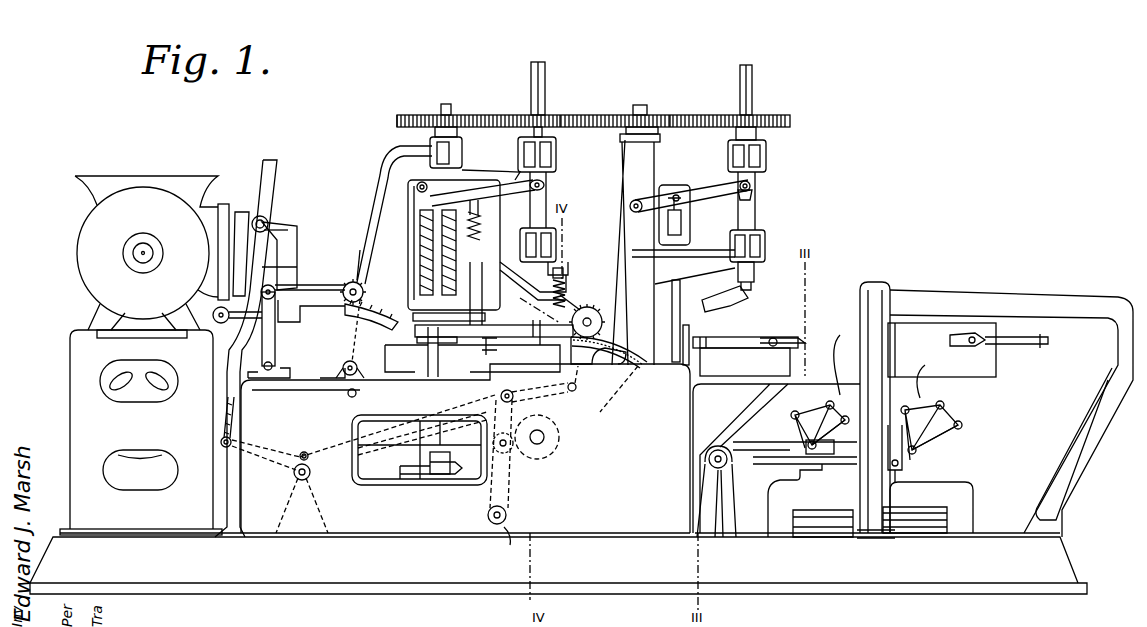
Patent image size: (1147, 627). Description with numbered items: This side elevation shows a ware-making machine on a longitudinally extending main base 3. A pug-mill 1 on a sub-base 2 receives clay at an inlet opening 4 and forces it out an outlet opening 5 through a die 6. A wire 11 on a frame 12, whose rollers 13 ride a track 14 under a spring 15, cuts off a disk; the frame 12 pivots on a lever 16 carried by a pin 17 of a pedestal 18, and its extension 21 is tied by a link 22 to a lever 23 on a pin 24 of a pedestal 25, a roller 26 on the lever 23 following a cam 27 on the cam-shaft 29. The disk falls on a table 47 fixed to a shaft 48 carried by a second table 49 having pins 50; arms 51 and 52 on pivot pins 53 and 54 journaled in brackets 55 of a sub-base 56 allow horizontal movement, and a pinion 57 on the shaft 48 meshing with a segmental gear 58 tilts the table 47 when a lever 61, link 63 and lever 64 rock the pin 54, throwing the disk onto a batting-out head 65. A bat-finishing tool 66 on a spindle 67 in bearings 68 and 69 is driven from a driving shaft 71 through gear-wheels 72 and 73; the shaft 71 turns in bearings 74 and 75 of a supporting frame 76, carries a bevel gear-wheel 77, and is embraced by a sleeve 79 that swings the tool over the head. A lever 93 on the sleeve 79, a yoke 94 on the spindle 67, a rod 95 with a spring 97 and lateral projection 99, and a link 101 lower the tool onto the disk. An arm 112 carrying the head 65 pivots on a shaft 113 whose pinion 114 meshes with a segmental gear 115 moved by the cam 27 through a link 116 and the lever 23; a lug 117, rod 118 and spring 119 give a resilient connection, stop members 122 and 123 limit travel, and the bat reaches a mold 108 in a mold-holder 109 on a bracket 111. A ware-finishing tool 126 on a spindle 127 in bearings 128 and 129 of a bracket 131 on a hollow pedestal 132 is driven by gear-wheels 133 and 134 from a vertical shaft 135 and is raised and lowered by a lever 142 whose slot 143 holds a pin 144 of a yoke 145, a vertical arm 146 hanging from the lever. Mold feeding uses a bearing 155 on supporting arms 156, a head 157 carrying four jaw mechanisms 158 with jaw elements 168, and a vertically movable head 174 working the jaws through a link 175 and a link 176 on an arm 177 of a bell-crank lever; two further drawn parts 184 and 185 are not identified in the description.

The motor 1 is at (78, 243).
The pedestal 2 is at (70, 410).
The base 3 is at (328, 568).
The motor housing 4 is at (160, 178).
The coupling body 5 is at (298, 245).
The coupling link 6 is at (285, 268).
The link arm 11 is at (300, 222).
The lever 12 is at (274, 162).
The pivot 13 is at (268, 218).
The clutch disc 14 is at (228, 206).
The connecting link 15 is at (238, 412).
The link 16 is at (226, 447).
The pivot pin 17 is at (312, 476).
The support legs 18 is at (328, 516).
The pin 21 is at (312, 455).
The connecting rod 22 is at (320, 457).
The link 23 is at (512, 478).
The pivot 24 is at (507, 515).
The arm 25 is at (510, 545).
The gear 26 is at (514, 450).
The cam 27 is at (556, 430).
The cam shaft 29 is at (546, 445).
The rod 47 is at (325, 285).
The pinion 48 is at (365, 284).
The link 49 is at (290, 310).
The crank pin 50 is at (270, 282).
The crank arm 51 is at (276, 332).
The link 52 is at (341, 331).
The pivot 53 is at (274, 366).
The pivot 54 is at (351, 358).
The bracket 55 is at (266, 375).
The frame 56 is at (228, 502).
The arm 57 is at (354, 272).
The gear segment 58 is at (390, 312).
The window 61 is at (419, 450).
The link 63 is at (386, 400).
The pivot 64 is at (341, 403).
The plate 65 is at (486, 314).
The lever 66 is at (512, 285).
The rod 67 is at (546, 70).
The guide block 68 is at (556, 150).
The guide block 69 is at (560, 243).
The slide 71 is at (448, 104).
The rack end 72 is at (414, 114).
The rack portion 73 is at (570, 114).
The guide block 74 is at (463, 150).
The column 75 is at (482, 298).
The frame arm 76 is at (378, 188).
The stop 77 is at (451, 466).
The housing 79 is at (424, 203).
The screw 93 is at (433, 183).
The lever 94 is at (545, 185).
The pin 95 is at (490, 212).
The spring 97 is at (484, 232).
The plate 99 is at (472, 362).
The block 101 is at (410, 456).
The bar 108 is at (728, 337).
The block 109 is at (811, 358).
The housing 111 is at (776, 460).
The plate 112 is at (494, 341).
The shaft 113 is at (591, 322).
The arm 114 is at (600, 312).
The gear segment 115 is at (622, 360).
The link 116 is at (575, 389).
The gear 117 is at (588, 307).
The nut 118 is at (565, 272).
The spring 119 is at (560, 292).
The post 122 is at (701, 339).
The bar 123 is at (418, 338).
The pawl 126 is at (750, 296).
The rod 127 is at (756, 88).
The guide block 128 is at (766, 156).
The plunger 129 is at (764, 276).
The bar 131 is at (683, 260).
The rod 132 is at (628, 213).
The rack 133 is at (795, 121).
The rack portion 134 is at (680, 116).
The stop 135 is at (644, 106).
The lever 142 is at (700, 188).
The housing 143 is at (730, 190).
The pin 144 is at (756, 193).
The pivot 145 is at (752, 184).
The plate 146 is at (683, 284).
The post 155 is at (883, 282).
The frame 156 is at (986, 292).
The box 157 is at (996, 365).
The pin 158 is at (782, 334).
The pin 168 is at (999, 336).
The arm 174 is at (905, 450).
The spring 175 is at (888, 360).
The link 176 is at (780, 450).
The lever 177 is at (796, 412).
The pivot 184 is at (748, 468).
The arm 185 is at (740, 431).